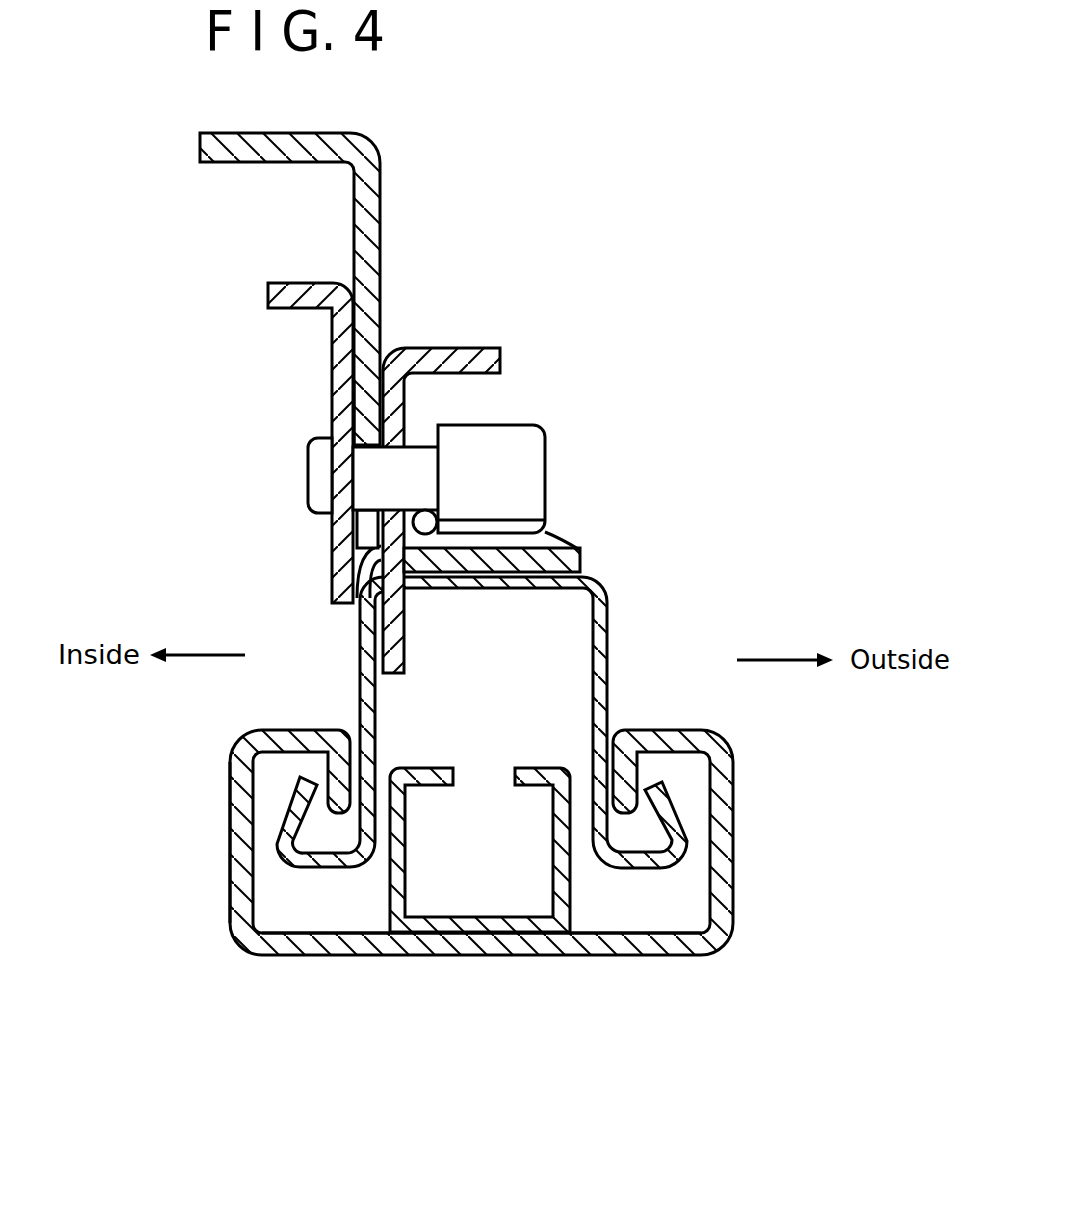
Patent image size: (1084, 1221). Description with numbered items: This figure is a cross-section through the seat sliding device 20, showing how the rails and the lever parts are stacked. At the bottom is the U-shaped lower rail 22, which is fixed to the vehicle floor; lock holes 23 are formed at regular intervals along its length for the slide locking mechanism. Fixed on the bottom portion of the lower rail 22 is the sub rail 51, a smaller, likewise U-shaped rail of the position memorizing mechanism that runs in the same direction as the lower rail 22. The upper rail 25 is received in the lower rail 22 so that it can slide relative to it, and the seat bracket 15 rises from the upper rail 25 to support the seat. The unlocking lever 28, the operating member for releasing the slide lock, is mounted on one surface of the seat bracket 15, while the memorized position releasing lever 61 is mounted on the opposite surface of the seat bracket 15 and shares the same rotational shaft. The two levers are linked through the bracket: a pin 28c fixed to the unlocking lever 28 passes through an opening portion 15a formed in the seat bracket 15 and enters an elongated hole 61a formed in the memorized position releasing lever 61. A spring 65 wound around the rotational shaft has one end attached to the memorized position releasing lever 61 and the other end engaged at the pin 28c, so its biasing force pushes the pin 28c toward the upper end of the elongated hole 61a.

The seat bracket 15 is at (386, 214).
The opening portion 15a is at (372, 417).
The unlocking lever 28 is at (266, 300).
The pin 28c is at (546, 480).
The memorized position releasing lever 61 is at (500, 360).
The elongated hole 61a is at (346, 553).
The spring 65 is at (583, 551).
The upper rail 25 is at (608, 640).
The sliding device 20 is at (681, 998).
The lower rail 22 is at (430, 950).
The lock holes 23 is at (243, 932).
The sub rail 51 is at (575, 905).